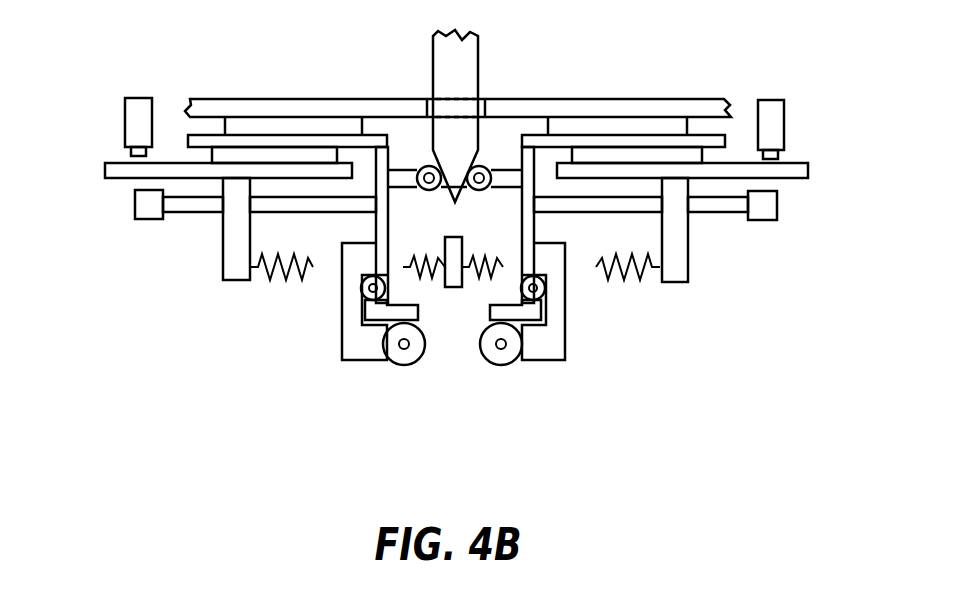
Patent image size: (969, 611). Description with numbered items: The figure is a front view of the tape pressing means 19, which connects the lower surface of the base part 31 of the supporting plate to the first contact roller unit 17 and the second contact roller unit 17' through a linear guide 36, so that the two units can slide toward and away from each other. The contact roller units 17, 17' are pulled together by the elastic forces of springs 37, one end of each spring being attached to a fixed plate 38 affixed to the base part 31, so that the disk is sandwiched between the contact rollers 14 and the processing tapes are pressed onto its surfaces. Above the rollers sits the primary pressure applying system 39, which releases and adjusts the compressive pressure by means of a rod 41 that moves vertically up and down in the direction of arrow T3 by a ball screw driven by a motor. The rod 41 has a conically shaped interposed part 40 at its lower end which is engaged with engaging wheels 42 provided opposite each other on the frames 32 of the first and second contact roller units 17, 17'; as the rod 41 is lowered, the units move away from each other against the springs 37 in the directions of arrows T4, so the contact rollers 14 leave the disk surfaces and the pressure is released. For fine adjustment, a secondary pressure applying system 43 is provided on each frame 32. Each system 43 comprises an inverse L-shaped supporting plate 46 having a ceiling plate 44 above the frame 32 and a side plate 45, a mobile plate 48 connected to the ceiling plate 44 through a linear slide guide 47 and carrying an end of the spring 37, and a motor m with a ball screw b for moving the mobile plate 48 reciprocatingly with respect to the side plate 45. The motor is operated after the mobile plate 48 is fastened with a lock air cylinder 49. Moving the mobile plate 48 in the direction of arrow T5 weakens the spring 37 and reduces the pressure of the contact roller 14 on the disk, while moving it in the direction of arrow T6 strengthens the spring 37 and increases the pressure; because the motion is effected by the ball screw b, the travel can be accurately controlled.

The contact roller 14 is at (410, 365).
The first contact roller unit 17 is at (599, 437).
The second contact roller unit 17' is at (335, 425).
The tape pressing means 19 is at (652, 412).
The base part 31 is at (527, 98).
The frame 32 is at (338, 353).
The linear guide 36 is at (328, 127).
The spring 37 is at (288, 280).
The fixed plate 38 is at (453, 290).
The primary pressure applying system 39 is at (507, 57).
The conically shaped interposed part 40 is at (462, 192).
The rod 41 is at (480, 43).
The engaging wheel 42 is at (482, 167).
The secondary pressure applying system 43 is at (192, 337).
The ceiling plate 44 is at (292, 142).
The side plate 45 is at (376, 222).
The supporting plate 46 is at (178, 128).
The linear slide guide 47 is at (253, 155).
The mobile plate 48 is at (106, 178).
The lock air cylinder 49 is at (125, 104).
The ball screw b is at (195, 212).
The arrow T3 is at (395, 22).
The arrow T4 is at (367, 472).
The arrow T5 is at (140, 352).
The arrow T6 is at (270, 350).